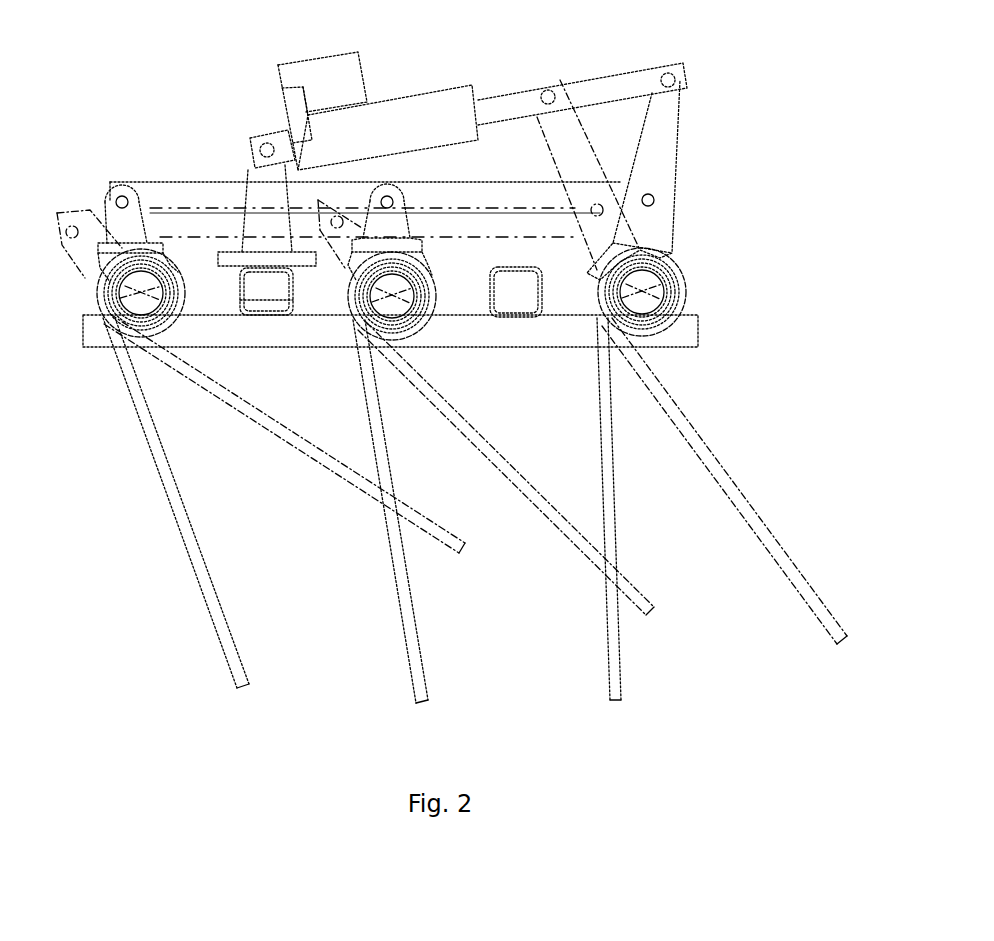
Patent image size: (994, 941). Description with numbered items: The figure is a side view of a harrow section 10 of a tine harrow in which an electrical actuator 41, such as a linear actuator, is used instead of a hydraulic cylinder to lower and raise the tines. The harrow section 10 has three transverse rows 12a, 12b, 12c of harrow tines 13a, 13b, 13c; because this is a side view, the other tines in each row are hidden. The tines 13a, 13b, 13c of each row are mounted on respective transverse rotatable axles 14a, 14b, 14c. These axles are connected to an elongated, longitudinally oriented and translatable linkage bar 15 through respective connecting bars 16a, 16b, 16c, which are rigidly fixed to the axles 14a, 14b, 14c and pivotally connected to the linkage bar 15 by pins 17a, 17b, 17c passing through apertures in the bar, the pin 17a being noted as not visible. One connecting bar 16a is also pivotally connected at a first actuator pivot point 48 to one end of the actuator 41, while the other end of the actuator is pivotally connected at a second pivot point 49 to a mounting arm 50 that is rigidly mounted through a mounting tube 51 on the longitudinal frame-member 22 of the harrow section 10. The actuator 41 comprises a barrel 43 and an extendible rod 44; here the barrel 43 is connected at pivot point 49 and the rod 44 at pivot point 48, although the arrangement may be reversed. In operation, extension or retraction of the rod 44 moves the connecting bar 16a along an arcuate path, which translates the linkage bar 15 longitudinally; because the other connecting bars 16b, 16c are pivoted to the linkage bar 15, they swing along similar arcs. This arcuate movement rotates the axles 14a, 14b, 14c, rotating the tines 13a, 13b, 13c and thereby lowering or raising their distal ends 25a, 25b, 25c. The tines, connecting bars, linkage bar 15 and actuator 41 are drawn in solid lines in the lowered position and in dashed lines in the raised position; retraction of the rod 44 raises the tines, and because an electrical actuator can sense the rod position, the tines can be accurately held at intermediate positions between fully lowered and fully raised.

The harrow section 10 is at (740, 336).
The transverse row of harrow tines 12a is at (645, 293).
The transverse row of harrow tines 12b is at (395, 297).
The transverse row of harrow tines 12c is at (143, 292).
The harrow tine 13a is at (608, 505).
The harrow tine 13b is at (400, 562).
The harrow tine 13c is at (168, 476).
The transverse rotatable axle 14a is at (660, 275).
The transverse rotatable axle 14b is at (413, 290).
The transverse rotatable axle 14c is at (118, 285).
The linkage bar 15 is at (172, 185).
The connecting bar 16a is at (670, 130).
The connecting bar 16b is at (402, 222).
The connecting bar 16c is at (122, 228).
The pin 17a is at (654, 200).
The pin 17b is at (390, 196).
The pin 17c is at (123, 195).
The longitudinal frame-member 22 is at (682, 348).
The distal end 25a is at (620, 705).
The distal end 25b is at (428, 705).
The distal end 25c is at (248, 690).
The electrical actuator 41 is at (518, 58).
The barrel 43 is at (396, 104).
The extendible rod 44 is at (598, 82).
The first actuator pivot point 48 is at (672, 73).
The second cylinder pivot point 49 is at (268, 143).
The mounting arm 50 is at (263, 186).
The mounting tube 51 is at (265, 318).